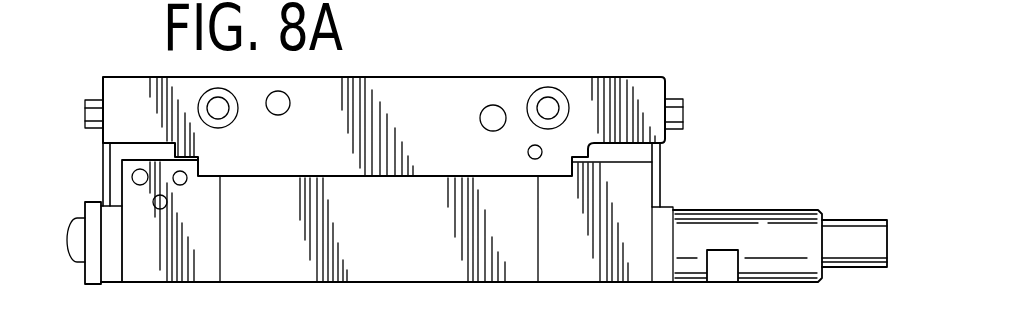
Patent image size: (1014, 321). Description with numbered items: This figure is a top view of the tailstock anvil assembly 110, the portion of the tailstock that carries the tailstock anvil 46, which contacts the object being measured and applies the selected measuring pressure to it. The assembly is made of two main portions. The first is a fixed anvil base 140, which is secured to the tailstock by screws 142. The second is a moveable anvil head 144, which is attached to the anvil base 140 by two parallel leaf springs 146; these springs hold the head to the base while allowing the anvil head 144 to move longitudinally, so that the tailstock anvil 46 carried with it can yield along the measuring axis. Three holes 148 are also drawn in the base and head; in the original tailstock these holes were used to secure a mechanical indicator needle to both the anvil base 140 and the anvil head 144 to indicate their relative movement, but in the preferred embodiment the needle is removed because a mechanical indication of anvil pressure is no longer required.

The tailstock anvil assembly 110 is at (760, 116).
The fixed anvil base 140 is at (463, 105).
The screws 142 is at (548, 107).
The moveable anvil head 144 is at (438, 255).
The parallel leaf springs 146 is at (102, 173).
The holes 148 is at (146, 181).
The tailstock anvil 46 is at (850, 237).